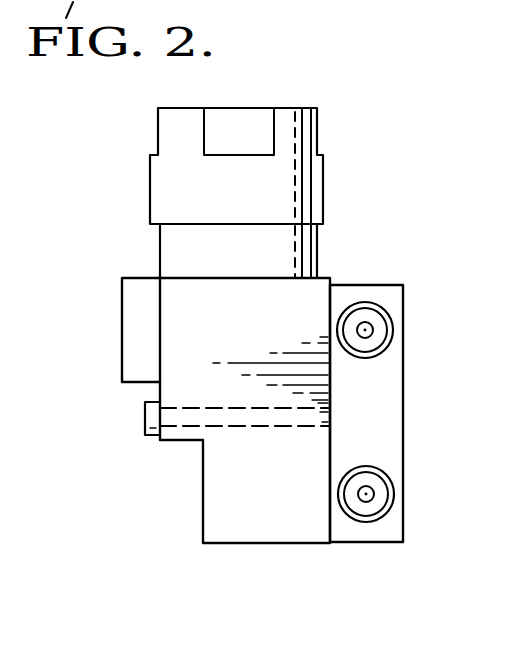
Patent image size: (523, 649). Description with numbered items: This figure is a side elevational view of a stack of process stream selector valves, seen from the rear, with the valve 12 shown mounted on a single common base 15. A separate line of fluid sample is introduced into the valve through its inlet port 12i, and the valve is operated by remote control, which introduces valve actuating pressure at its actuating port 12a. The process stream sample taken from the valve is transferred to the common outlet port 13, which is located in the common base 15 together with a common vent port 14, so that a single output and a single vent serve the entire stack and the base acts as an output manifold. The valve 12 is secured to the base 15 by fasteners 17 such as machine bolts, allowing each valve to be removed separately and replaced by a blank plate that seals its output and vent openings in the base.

The process stream selector valve 12 is at (160, 252).
The actuating port 12a is at (122, 326).
The inlet port 12i is at (248, 108).
The common outlet port 13 is at (374, 487).
The common vent port 14 is at (373, 322).
The common base 15 is at (378, 543).
The fasteners 17 is at (145, 423).